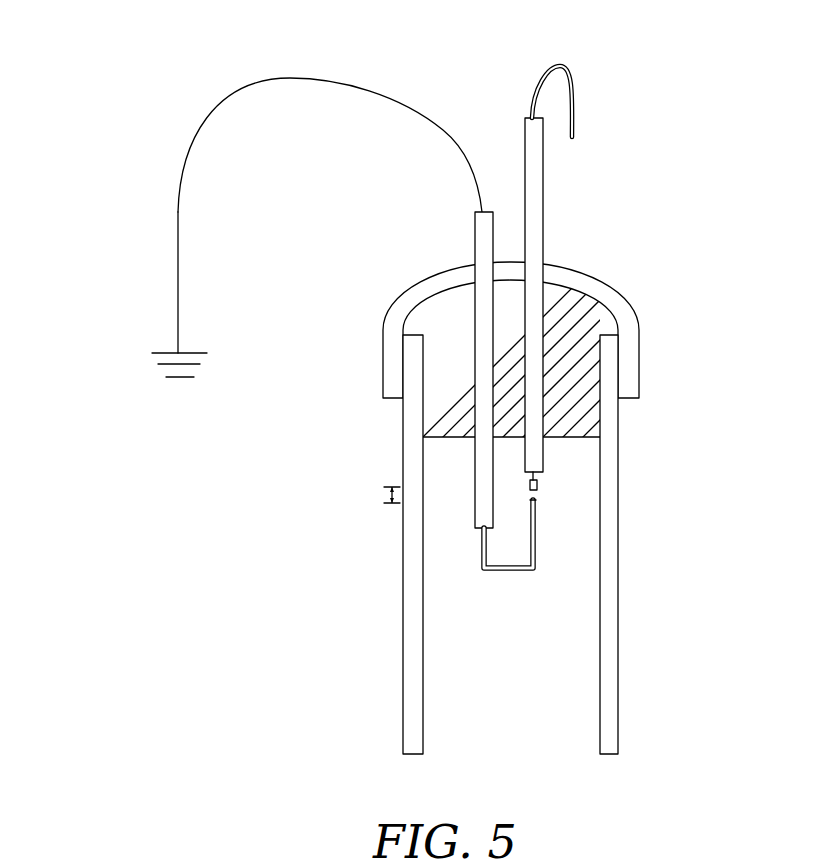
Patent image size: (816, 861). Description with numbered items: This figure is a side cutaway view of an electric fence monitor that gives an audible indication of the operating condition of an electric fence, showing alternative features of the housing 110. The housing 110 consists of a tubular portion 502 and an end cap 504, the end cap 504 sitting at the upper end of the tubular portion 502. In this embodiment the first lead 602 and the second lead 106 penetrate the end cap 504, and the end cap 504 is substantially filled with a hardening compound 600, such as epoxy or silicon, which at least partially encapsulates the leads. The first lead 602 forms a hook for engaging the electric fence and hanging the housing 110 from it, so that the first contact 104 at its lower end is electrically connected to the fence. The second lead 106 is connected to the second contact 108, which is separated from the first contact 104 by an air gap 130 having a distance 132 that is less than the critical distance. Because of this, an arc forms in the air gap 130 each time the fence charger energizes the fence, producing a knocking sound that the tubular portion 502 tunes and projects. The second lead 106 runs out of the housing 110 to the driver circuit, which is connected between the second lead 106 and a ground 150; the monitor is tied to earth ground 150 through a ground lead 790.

The second lead 106 is at (287, 76).
The ground lead 790 is at (178, 246).
The ground 150 is at (154, 374).
The end cap 504 is at (453, 265).
The hardening compound 600 is at (575, 372).
The tubular portion 502 is at (618, 612).
The housing 110 is at (499, 135).
The first lead 602 is at (563, 66).
The second contact 108 is at (508, 567).
The first contact 104 is at (538, 485).
The air gap 130 is at (555, 496).
The distance 132 is at (388, 493).